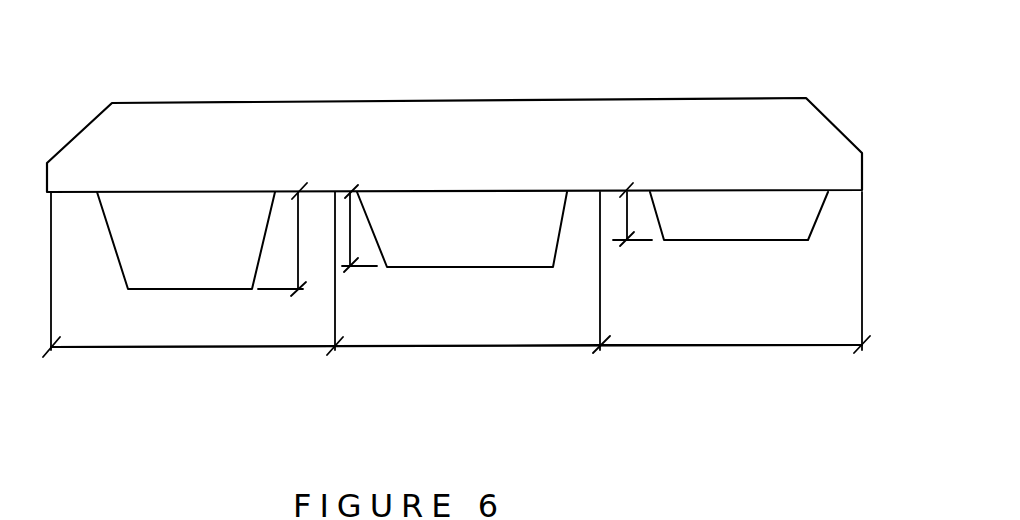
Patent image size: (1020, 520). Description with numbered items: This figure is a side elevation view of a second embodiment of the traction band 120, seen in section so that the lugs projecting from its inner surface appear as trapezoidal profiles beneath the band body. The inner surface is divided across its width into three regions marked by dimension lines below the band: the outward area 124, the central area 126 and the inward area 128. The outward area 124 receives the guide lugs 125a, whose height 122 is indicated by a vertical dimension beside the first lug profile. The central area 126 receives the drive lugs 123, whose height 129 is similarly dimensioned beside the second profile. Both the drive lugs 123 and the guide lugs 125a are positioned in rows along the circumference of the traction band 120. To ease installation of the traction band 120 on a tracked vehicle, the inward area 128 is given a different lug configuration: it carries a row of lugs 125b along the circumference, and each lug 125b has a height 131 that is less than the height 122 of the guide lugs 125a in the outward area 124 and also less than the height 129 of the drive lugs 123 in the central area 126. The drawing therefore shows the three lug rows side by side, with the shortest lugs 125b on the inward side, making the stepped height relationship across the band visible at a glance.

The traction band 120 is at (613, 62).
The guide lugs 125a is at (147, 255).
The height of the guide lugs 122 is at (297, 252).
The outward area 124 is at (195, 348).
The height of the drive lugs 129 is at (350, 240).
The drive lugs 123 is at (503, 250).
The central area 126 is at (435, 348).
The height of the inward-area lugs 131 is at (625, 220).
The lugs 125b is at (777, 223).
The inward area 128 is at (742, 345).